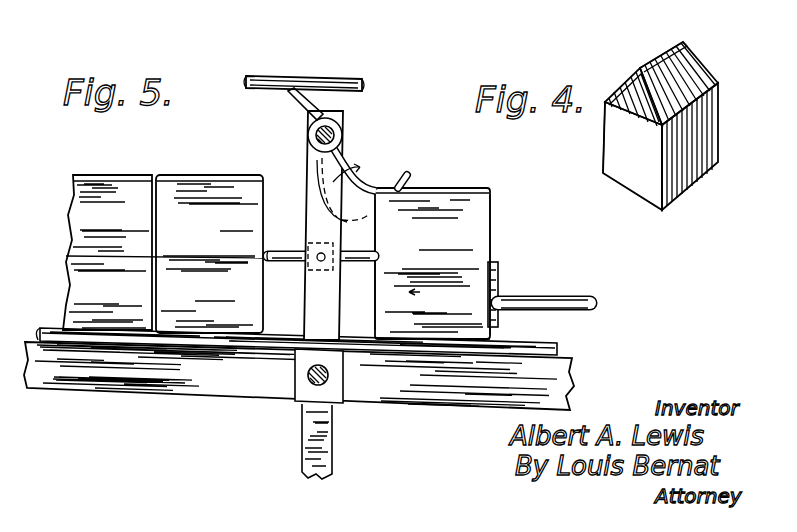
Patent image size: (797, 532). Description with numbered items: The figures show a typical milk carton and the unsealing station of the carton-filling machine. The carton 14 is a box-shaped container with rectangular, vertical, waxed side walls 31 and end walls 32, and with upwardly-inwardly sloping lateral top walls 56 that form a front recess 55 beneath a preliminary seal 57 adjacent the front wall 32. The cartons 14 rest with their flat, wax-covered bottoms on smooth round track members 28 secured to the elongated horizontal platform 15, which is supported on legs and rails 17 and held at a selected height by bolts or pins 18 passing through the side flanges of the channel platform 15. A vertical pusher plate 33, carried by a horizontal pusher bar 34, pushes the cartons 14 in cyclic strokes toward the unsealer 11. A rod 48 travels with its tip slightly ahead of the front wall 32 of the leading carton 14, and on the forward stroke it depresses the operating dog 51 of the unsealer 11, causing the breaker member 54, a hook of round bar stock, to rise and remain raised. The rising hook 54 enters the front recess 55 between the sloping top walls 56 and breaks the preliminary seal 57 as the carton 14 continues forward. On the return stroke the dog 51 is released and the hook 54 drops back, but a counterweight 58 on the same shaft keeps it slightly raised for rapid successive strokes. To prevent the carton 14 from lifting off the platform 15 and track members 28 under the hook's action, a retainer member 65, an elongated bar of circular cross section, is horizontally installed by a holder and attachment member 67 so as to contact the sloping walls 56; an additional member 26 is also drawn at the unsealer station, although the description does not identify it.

In FIG. 5, the unsealer 11 is at (393, 121).
In FIG. 4, the cartons 14 is at (598, 163).
In FIG. 5, the cartons 14 is at (191, 169).
In FIG. 5, the platform 15 is at (460, 408).
In FIG. 5, the rails 17 is at (335, 461).
In FIG. 5, the bolts or pins 18 is at (329, 377).
In FIG. 5, the pin 26 is at (268, 251).
In FIG. 5, the track members 28 is at (557, 346).
In FIG. 4, the side walls 31 is at (707, 143).
In FIG. 5, the side walls 31 is at (491, 339).
In FIG. 4, the end walls 32 is at (637, 170).
In FIG. 5, the end walls 32 is at (372, 317).
In FIG. 5, the pusher plate 33 is at (499, 272).
In FIG. 5, the pusher bar 34 is at (566, 297).
In FIG. 5, the rod 48 is at (322, 77).
In FIG. 5, the operating dog 51 is at (300, 107).
In FIG. 5, the breaker member 54 is at (410, 170).
In FIG. 4, the front recess 55 is at (625, 103).
In FIG. 4, the lateral top walls 56 is at (690, 78).
In FIG. 5, the lateral top walls 56 is at (488, 227).
In FIG. 4, the preliminary seal 57 is at (673, 62).
In FIG. 5, the counterweight 58 is at (315, 139).
In FIG. 5, the retainer member 65 is at (293, 268).
In FIG. 5, the holder and attachment member 67 is at (327, 270).